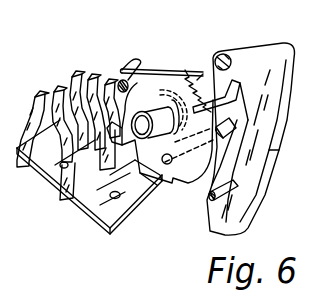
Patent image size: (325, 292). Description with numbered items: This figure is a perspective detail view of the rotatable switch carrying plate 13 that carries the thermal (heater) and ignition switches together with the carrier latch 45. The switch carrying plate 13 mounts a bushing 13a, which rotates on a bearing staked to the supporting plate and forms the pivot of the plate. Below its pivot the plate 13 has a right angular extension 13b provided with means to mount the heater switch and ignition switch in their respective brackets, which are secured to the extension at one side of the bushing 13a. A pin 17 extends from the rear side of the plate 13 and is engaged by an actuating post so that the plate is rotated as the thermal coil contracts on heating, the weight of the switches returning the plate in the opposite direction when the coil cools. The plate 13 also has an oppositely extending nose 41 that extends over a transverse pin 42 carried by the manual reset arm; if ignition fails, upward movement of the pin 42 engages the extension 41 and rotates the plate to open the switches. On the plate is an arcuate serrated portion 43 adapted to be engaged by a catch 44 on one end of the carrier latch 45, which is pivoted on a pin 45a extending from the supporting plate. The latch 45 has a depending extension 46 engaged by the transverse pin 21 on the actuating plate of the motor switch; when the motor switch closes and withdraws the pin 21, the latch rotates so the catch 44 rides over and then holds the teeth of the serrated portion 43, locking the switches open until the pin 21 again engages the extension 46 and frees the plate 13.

The switch carrying plate 13 is at (150, 83).
The bushing 13a is at (140, 128).
The right angular extension 13b is at (157, 185).
The nose extension 41 is at (133, 66).
The transverse pin 42 is at (120, 81).
The arcuate serrated portion 43 is at (183, 72).
The catch 44 is at (215, 97).
The carrier latch 45 is at (258, 68).
The pin 45a is at (224, 54).
The depending extension 46 is at (268, 163).
The pin 17 is at (235, 137).
The transverse pin 21 is at (208, 198).